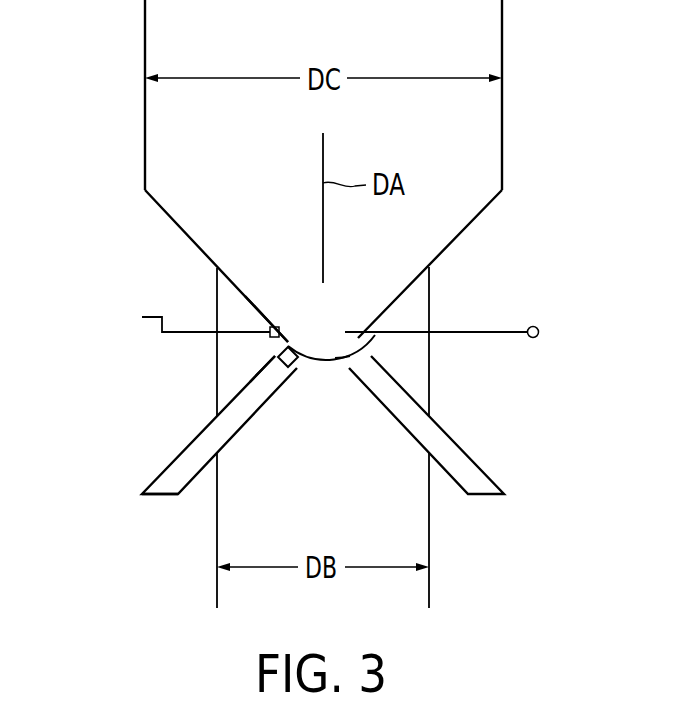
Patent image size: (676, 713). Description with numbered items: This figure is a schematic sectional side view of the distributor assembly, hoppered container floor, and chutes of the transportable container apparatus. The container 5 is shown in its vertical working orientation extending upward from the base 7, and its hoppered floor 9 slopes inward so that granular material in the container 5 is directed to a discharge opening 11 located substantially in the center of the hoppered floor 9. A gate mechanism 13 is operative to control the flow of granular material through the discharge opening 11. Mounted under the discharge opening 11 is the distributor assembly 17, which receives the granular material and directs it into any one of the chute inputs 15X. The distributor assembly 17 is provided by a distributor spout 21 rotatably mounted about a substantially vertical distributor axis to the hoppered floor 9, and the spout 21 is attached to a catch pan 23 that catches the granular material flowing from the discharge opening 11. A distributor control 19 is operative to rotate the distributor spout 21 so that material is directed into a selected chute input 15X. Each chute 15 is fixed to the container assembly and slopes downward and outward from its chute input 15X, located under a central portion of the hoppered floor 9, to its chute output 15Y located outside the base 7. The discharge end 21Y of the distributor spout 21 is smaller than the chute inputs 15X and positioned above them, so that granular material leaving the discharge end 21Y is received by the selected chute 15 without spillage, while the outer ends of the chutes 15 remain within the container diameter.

The container 5 is at (503, 5).
The hoppered floor 9 is at (468, 212).
The discharge opening 11 is at (310, 338).
The distributor assembly 17 is at (327, 357).
The catch pan 23 is at (343, 362).
The base 7 is at (429, 550).
The distributor control 19 is at (177, 333).
The gate mechanism 13 is at (483, 332).
The chute 15 is at (178, 456).
The chute input 15X is at (275, 356).
The chute output 15Y is at (142, 494).
The distributor spout 21 is at (272, 417).
The discharge end 21Y is at (303, 367).